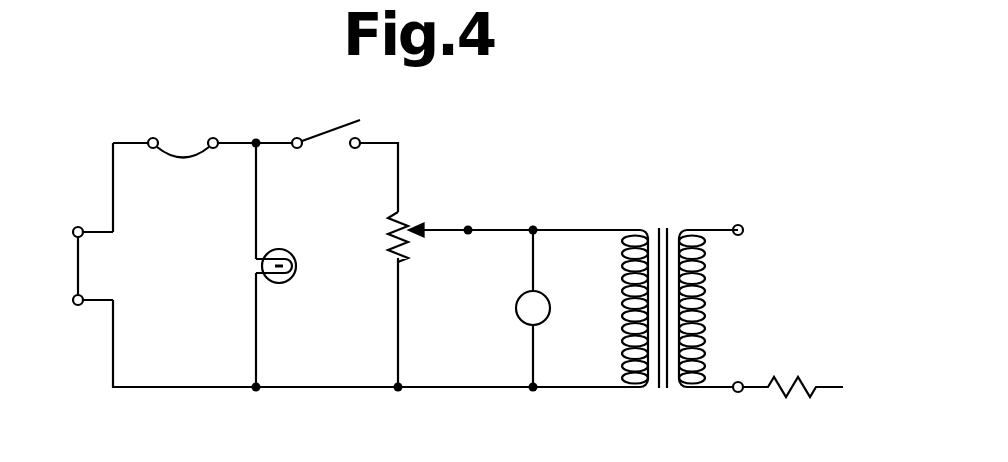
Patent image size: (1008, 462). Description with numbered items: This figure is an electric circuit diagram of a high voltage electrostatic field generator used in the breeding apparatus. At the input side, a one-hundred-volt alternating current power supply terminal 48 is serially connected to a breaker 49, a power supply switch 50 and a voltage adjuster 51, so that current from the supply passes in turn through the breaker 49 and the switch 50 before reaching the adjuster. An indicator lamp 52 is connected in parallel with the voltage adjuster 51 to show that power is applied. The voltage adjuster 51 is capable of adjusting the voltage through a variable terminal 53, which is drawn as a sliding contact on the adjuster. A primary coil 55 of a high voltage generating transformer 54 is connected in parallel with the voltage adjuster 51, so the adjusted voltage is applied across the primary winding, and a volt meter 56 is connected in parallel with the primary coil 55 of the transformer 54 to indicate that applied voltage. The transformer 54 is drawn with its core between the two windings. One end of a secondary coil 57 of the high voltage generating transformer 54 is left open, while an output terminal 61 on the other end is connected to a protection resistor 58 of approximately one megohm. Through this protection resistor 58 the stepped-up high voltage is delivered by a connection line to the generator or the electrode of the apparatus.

The alternating current power supply terminal 48 is at (78, 266).
The breaker 49 is at (183, 160).
The power supply switch 50 is at (322, 134).
The voltage adjuster 51 is at (405, 212).
The indicator lamp 52 is at (297, 265).
The variable terminal 53 is at (424, 228).
The high voltage generating transformer 54 is at (652, 386).
The primary coil 55 is at (622, 340).
The volt meter 56 is at (552, 296).
The secondary coil 57 is at (706, 290).
The protection resistor 58 is at (792, 376).
The output terminal 61 is at (741, 382).